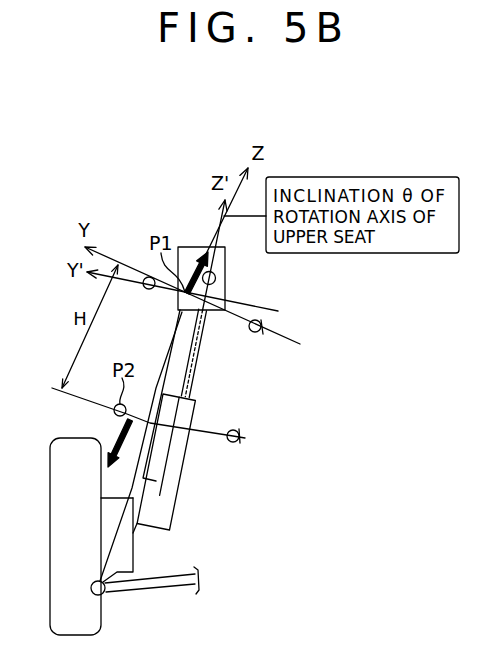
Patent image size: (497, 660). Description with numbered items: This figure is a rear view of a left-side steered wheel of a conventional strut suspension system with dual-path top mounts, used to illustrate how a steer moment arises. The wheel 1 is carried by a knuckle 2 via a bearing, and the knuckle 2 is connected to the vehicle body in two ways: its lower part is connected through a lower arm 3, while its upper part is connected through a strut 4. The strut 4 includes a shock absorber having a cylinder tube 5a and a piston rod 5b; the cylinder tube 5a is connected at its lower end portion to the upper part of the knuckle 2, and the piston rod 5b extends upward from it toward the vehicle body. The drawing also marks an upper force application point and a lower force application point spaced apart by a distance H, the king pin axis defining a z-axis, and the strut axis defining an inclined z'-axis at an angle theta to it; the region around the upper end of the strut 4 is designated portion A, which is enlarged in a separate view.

The wheel 1 is at (56, 602).
The knuckle 2 is at (131, 553).
The lower arm 3 is at (173, 587).
The strut 4 is at (190, 503).
The cylinder tube 5a is at (177, 474).
The piston rod 5b is at (198, 357).
The portion A is at (197, 247).